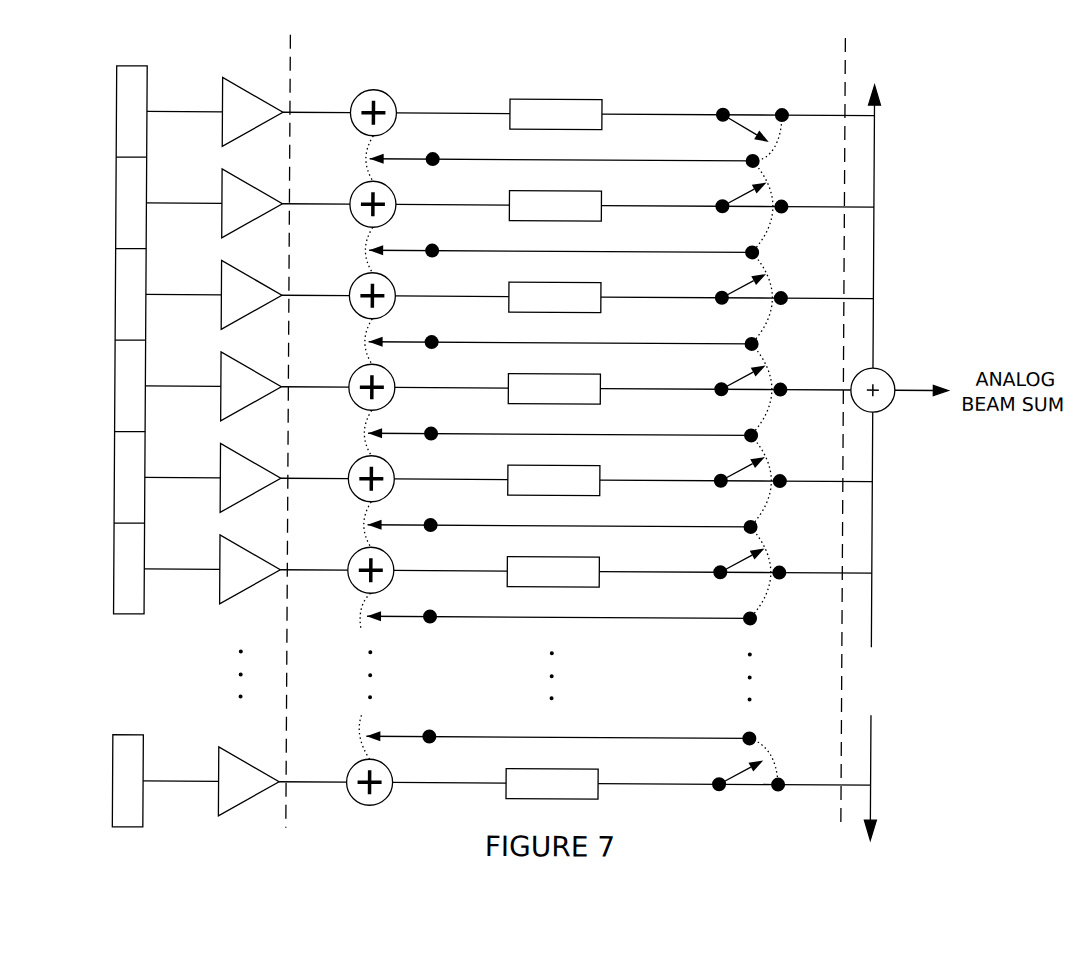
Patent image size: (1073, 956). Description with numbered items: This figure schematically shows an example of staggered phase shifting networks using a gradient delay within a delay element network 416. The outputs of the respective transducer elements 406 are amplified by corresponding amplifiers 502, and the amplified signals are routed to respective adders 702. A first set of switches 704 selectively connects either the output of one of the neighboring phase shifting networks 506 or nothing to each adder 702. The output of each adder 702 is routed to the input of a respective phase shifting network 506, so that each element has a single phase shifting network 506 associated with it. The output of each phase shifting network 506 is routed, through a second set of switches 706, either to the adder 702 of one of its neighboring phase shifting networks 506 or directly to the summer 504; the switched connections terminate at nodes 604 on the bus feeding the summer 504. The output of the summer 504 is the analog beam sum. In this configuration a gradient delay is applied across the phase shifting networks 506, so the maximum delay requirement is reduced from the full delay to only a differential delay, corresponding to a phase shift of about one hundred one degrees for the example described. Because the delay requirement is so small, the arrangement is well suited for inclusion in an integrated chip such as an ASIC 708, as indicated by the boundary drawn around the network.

The transducer elements 406 is at (128, 66).
The delay element network 416 is at (288, 86).
The amplifiers 502 is at (221, 100).
The adders 702 is at (371, 92).
The first set of switches 704 is at (404, 158).
The phase shifting networks 506 is at (585, 70).
The second set of switches 706 is at (736, 102).
The switch outputs 604 is at (781, 104).
The ASIC 708 is at (844, 80).
The summer 504 is at (874, 368).